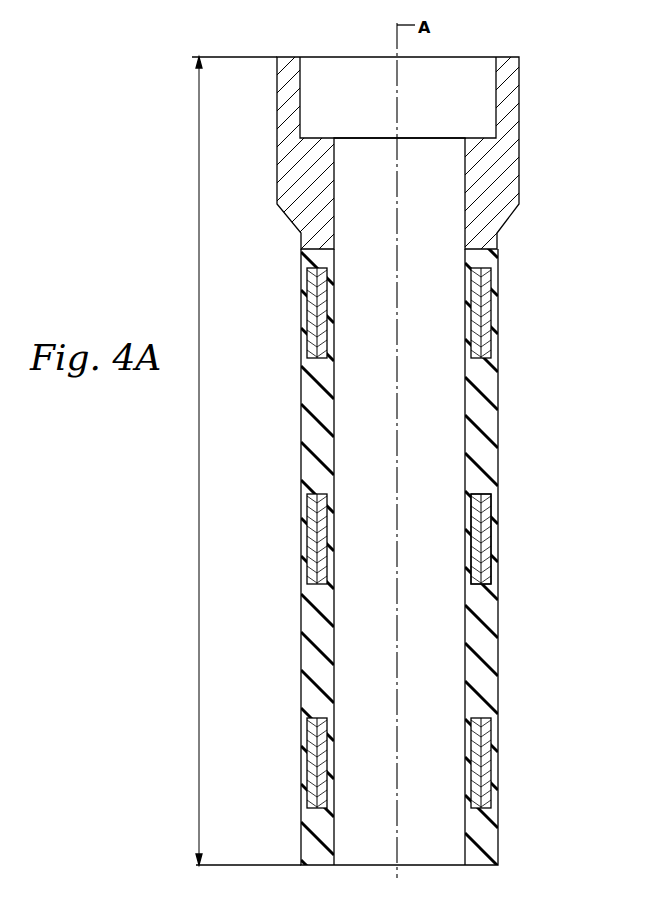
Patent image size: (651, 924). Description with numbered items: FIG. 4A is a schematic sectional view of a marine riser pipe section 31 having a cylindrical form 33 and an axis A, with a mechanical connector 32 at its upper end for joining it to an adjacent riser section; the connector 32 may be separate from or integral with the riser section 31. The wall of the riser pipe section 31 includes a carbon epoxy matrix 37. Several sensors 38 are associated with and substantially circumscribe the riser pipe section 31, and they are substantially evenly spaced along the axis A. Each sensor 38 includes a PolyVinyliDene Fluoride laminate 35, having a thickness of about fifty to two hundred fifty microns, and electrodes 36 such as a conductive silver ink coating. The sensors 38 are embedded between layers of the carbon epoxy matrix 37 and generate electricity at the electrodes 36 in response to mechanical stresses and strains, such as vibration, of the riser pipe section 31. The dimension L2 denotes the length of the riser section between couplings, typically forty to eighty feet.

The marine riser pipe section 31 is at (283, 426).
The mechanical connector 32 is at (520, 161).
The cylindrical form 33 is at (183, 242).
The PolyVinyliDene Fluoride laminate 35 is at (482, 287).
The electrodes 36 is at (487, 317).
The carbon epoxy matrix 37 is at (482, 410).
The sensor 38 is at (512, 480).